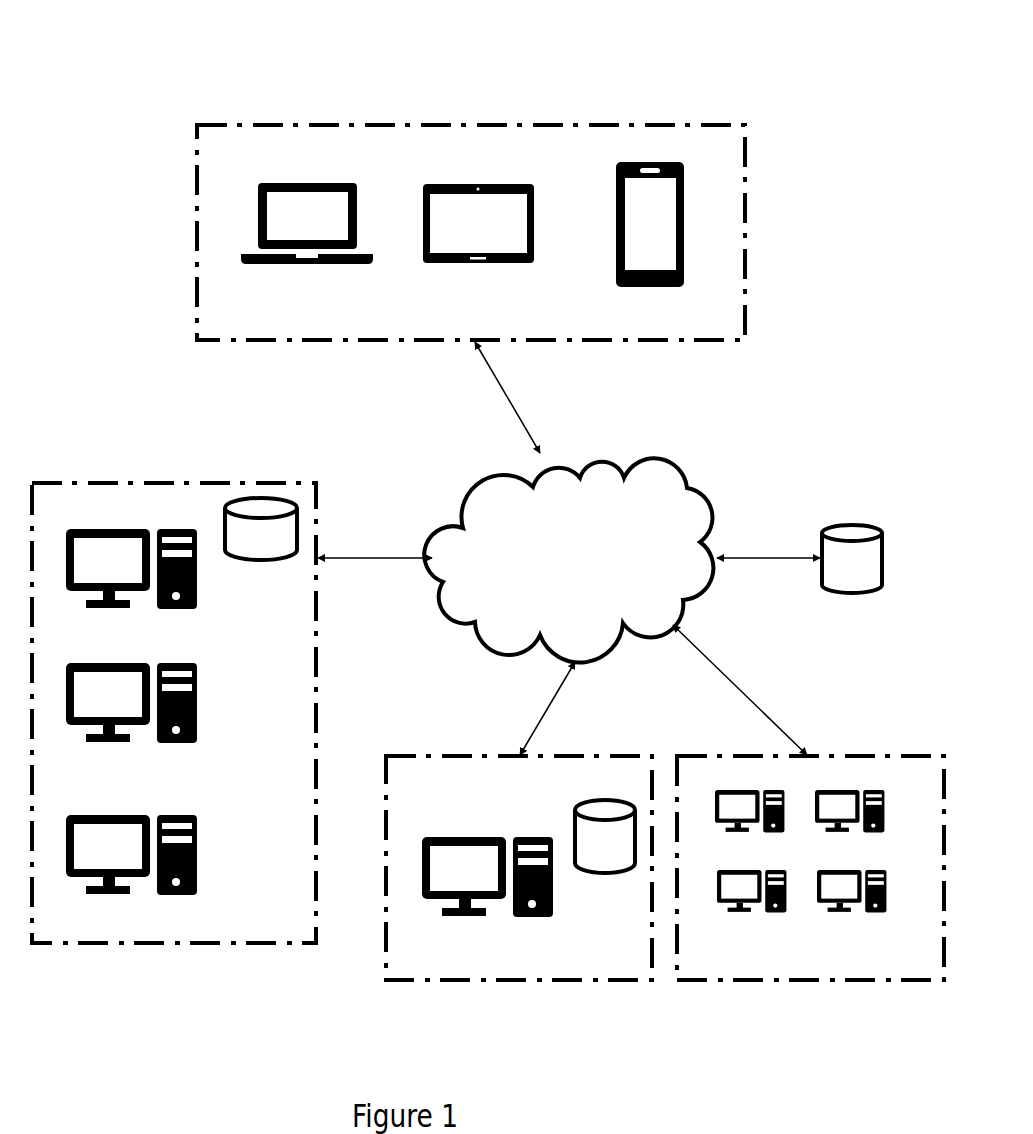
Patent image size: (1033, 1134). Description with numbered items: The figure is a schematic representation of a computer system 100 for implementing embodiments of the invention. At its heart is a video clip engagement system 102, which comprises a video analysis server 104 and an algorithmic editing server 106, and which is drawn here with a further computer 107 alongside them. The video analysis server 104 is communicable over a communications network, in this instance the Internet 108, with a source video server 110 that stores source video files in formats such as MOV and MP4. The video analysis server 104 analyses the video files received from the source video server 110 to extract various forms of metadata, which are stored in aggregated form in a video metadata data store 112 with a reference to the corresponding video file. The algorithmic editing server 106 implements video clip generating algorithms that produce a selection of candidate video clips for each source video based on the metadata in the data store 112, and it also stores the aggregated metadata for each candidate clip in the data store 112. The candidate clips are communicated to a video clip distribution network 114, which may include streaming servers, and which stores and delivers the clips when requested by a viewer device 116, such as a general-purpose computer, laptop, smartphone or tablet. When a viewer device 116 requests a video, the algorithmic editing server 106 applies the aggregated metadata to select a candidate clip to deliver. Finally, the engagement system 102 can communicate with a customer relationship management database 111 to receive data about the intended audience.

The computer system 100 is at (756, 42).
The video clip engagement system 102 is at (199, 481).
The video analysis server 104 is at (110, 527).
The algorithmic editing server 106 is at (112, 661).
The computer 107 is at (112, 812).
The Internet 108 is at (669, 455).
The source video server 110 is at (574, 755).
The customer relationship management database 111 is at (849, 517).
The video metadata data store 112 is at (261, 529).
The video clip distribution network 114 is at (854, 755).
The viewer device 116 is at (477, 123).